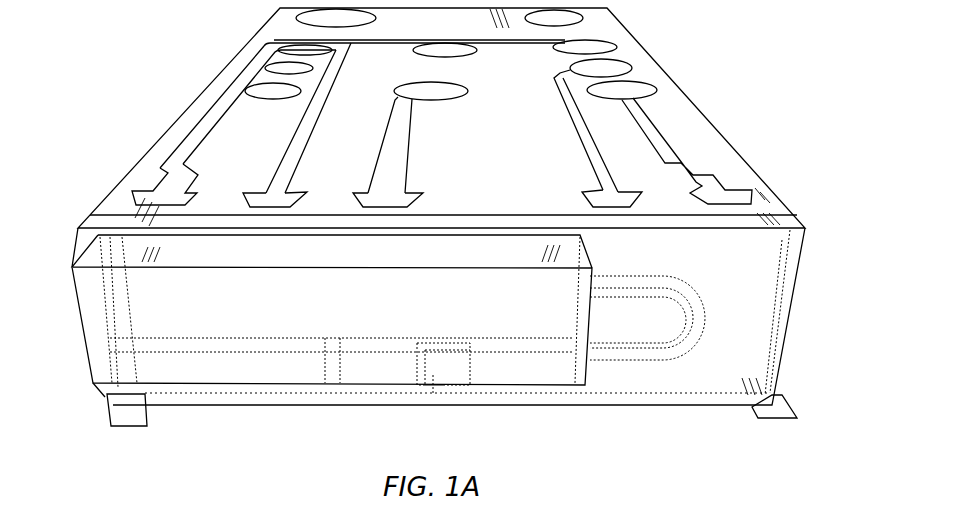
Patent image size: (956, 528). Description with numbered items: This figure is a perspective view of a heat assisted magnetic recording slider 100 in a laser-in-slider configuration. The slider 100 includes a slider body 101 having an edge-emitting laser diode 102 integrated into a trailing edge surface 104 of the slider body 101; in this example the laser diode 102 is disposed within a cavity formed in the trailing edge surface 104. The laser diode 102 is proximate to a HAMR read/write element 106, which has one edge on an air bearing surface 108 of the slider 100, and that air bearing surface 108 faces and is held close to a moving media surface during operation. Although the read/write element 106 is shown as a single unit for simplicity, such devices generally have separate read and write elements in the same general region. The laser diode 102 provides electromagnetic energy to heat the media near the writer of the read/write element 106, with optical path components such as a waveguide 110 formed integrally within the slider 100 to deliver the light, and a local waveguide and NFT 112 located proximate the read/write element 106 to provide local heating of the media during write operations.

The slider 100 is at (697, 45).
The slider body 101 is at (132, 174).
The edge-emitting laser diode 102 is at (105, 355).
The trailing edge surface 104 is at (132, 428).
The HAMR read/write element 106 is at (453, 393).
The air bearing surface 108 is at (790, 418).
The waveguide 110 is at (652, 357).
The local waveguide and NFT 112 is at (428, 397).